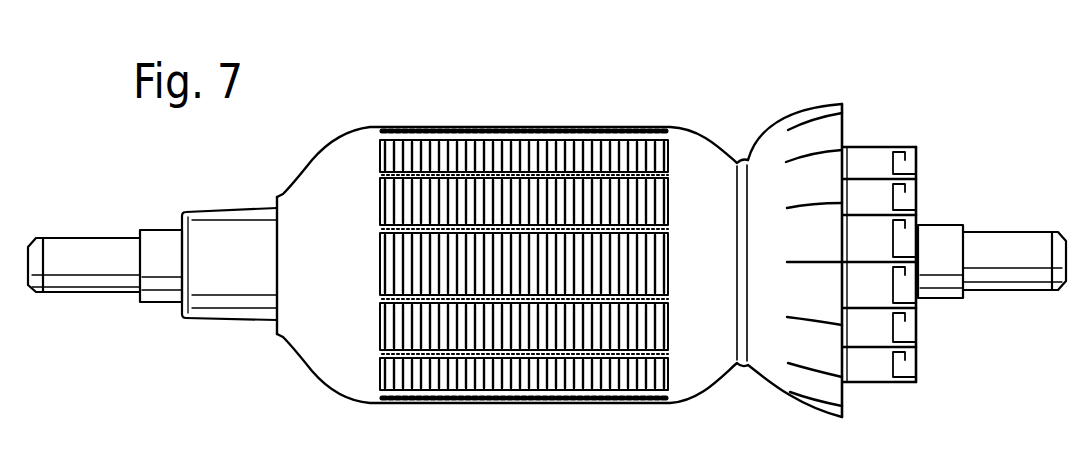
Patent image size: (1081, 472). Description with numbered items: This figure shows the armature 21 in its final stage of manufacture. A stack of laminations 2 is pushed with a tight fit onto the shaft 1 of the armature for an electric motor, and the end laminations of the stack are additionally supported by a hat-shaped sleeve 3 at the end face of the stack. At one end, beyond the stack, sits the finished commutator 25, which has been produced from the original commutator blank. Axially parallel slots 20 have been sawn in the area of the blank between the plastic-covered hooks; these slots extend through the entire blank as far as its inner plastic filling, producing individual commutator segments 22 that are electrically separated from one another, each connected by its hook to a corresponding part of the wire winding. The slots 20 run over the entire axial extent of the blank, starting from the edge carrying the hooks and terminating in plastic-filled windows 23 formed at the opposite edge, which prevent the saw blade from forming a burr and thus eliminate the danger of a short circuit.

The shaft 1 is at (115, 257).
The stack of laminations 2 is at (472, 200).
The hat-shaped sleeve 3 is at (241, 275).
The slots 20 is at (877, 217).
The armature 21 is at (636, 111).
The commutator segments 22 is at (920, 266).
The windows 23 is at (920, 352).
The commutator 25 is at (936, 150).